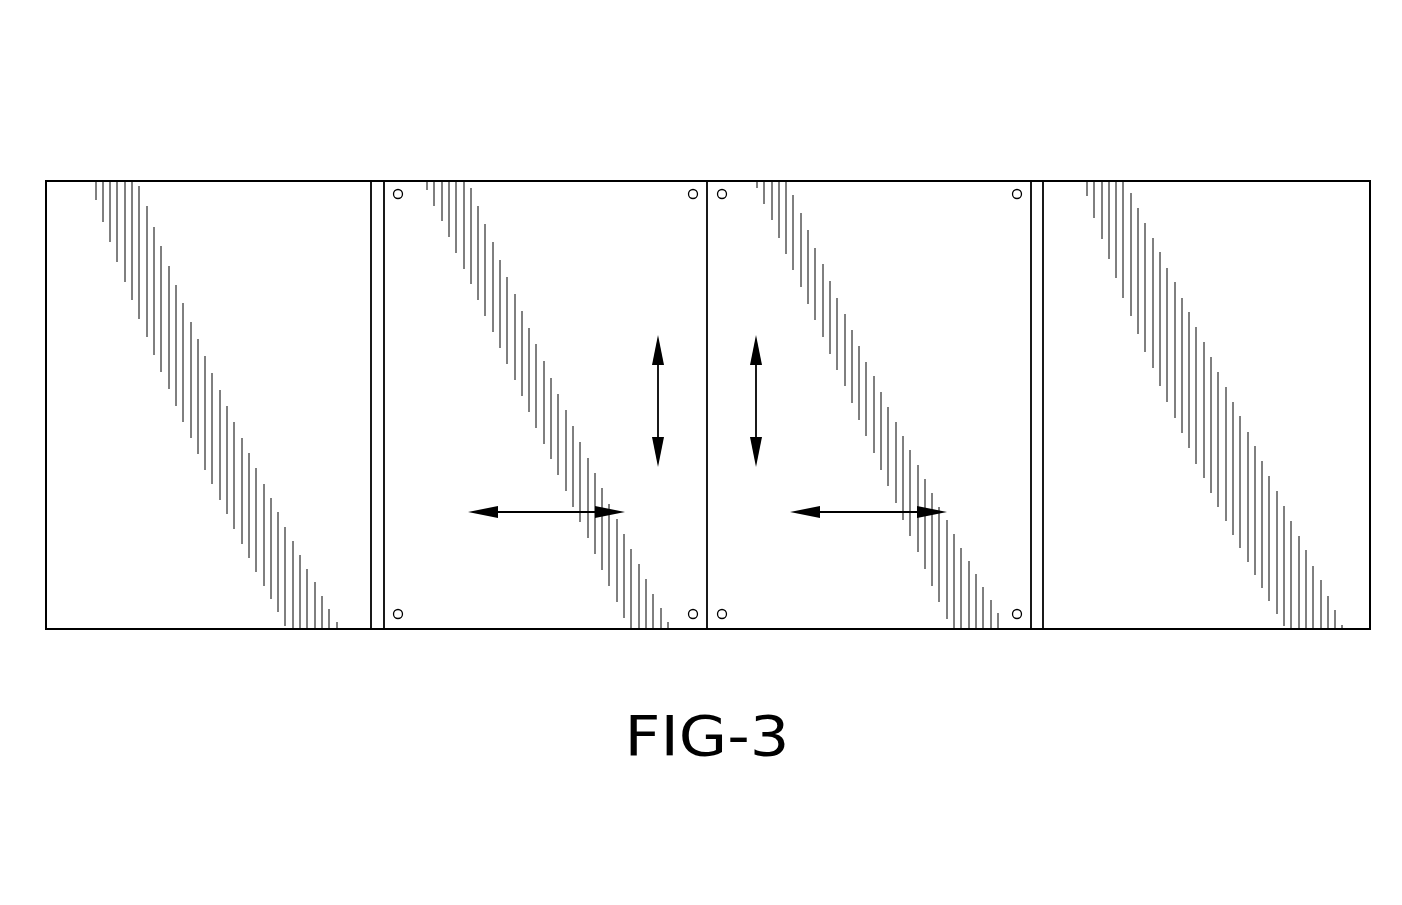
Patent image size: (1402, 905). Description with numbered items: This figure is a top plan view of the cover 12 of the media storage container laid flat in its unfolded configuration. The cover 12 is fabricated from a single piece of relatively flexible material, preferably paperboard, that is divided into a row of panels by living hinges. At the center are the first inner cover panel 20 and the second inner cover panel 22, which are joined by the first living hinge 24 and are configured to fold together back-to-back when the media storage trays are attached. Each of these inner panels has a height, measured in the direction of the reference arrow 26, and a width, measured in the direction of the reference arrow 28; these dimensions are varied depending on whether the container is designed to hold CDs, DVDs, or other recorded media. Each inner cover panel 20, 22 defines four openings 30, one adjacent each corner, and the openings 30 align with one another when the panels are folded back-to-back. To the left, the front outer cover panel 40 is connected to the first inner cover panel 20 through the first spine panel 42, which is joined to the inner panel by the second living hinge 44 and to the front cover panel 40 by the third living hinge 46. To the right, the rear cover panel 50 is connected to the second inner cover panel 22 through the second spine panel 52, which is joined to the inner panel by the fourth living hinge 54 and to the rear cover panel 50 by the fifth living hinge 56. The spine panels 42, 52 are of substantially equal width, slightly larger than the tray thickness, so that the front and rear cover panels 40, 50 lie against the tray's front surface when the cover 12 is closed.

The cover 12 is at (950, 84).
The first inner cover panel 20 is at (560, 211).
The second inner cover panel 22 is at (888, 211).
The first living hinge 24 is at (706, 281).
The height 26 is at (657, 402).
The width 28 is at (545, 514).
The openings 30 is at (399, 189).
The front outer cover panel 40 is at (214, 212).
The first spine panel 42 is at (378, 470).
The second living hinge 44 is at (385, 407).
The third living hinge 46 is at (370, 358).
The rear cover panel 50 is at (1227, 208).
The second spine panel 52 is at (1040, 544).
The fourth living hinge 54 is at (1030, 432).
The fifth living hinge 56 is at (1045, 481).